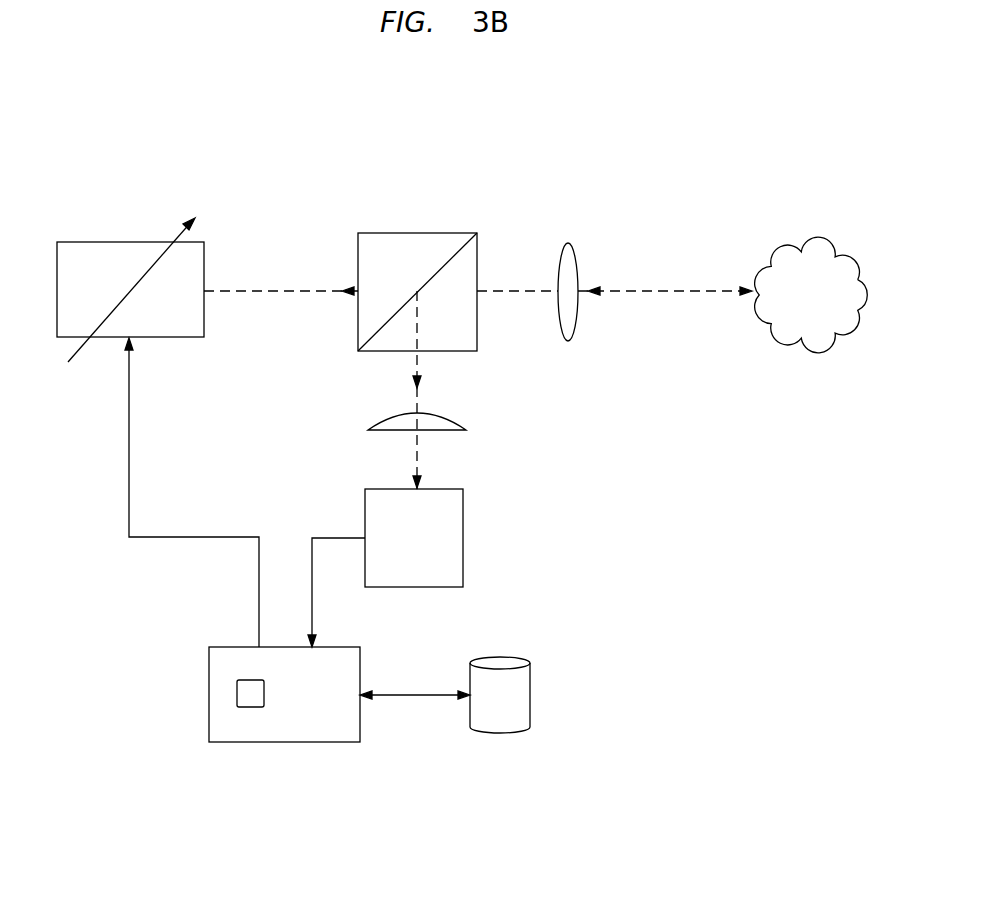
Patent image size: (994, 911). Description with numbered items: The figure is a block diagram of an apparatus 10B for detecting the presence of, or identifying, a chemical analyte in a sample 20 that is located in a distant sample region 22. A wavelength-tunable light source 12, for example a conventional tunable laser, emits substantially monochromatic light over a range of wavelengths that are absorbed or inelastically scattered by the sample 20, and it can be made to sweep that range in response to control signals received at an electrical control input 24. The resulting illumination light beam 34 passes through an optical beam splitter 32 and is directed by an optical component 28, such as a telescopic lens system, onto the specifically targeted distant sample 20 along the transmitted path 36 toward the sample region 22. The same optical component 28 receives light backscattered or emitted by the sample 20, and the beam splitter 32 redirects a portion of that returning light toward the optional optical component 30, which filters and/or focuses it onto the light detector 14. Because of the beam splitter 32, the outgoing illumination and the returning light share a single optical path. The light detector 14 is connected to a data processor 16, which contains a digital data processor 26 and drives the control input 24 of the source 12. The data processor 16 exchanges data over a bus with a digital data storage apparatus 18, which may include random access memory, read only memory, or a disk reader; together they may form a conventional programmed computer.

The apparatus 10B is at (660, 148).
The wavelength-tunable light source 12 is at (183, 319).
The light detector 14 is at (428, 550).
The data processor 16 is at (339, 724).
The digital data storage apparatus 18 is at (512, 714).
The sample 20 is at (822, 310).
The sample region 22 is at (850, 258).
The electrical control input 24 is at (133, 341).
The digital data processor 26 is at (265, 685).
The optical component 28 is at (575, 254).
The optical component 30 is at (450, 421).
The optical beam splitter 32 is at (477, 241).
The illumination light beam 34 is at (279, 279).
The transmitted beam 36 is at (673, 281).